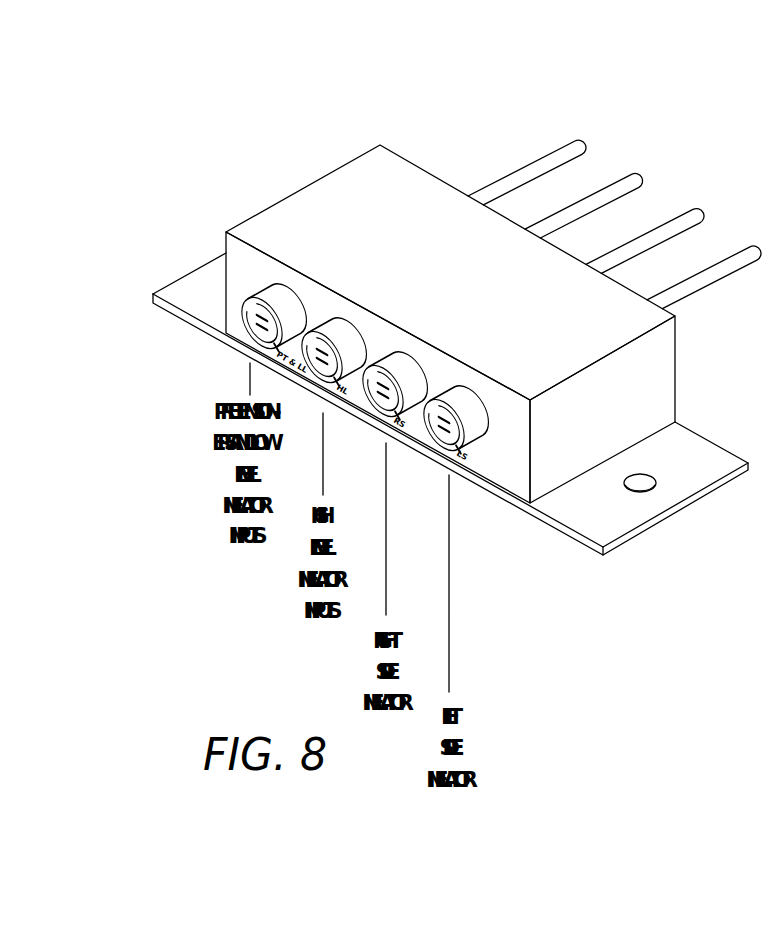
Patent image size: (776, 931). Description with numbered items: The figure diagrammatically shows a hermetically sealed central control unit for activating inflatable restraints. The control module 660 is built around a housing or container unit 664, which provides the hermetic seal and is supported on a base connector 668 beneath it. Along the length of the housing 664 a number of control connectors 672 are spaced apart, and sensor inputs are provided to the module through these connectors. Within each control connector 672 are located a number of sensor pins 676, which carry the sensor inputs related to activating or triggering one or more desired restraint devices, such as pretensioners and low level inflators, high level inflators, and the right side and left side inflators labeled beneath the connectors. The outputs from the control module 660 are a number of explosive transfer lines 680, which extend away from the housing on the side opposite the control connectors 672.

The control module 660 is at (430, 173).
The housing 664 is at (667, 372).
The base connector 668 is at (605, 532).
The control connectors 672 is at (407, 362).
The sensor pins 676 is at (247, 330).
The explosive transfer lines 680 is at (752, 243).